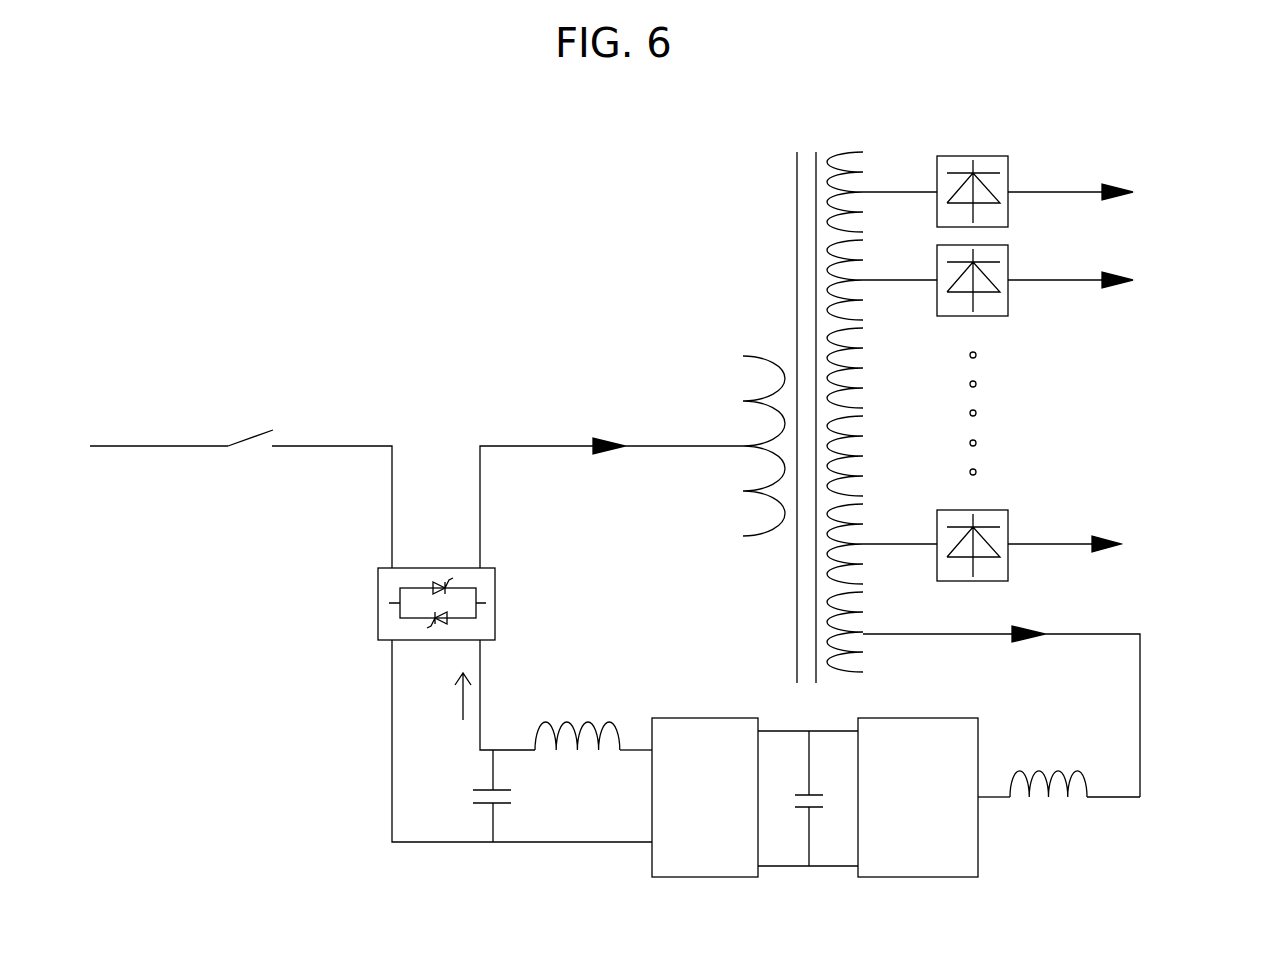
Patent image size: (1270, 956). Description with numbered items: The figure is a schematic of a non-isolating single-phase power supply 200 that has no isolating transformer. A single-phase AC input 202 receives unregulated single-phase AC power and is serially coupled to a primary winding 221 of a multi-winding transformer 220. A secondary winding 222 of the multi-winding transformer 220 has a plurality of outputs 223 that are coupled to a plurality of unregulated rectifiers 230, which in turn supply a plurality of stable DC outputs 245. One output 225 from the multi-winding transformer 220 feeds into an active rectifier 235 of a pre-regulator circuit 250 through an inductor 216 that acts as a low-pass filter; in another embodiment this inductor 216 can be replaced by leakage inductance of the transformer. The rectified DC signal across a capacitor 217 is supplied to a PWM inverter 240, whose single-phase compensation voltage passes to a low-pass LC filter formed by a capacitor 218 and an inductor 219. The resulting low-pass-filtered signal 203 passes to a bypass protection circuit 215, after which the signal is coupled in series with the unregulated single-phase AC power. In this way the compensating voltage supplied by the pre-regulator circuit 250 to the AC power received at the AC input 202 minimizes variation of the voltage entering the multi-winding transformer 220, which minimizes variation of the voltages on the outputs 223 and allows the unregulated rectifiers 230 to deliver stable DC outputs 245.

The power supply 200 is at (489, 164).
The single-phase AC input 202 is at (152, 407).
The low-pass-filtered signal 203 is at (458, 694).
The bypass protection circuit 215 is at (495, 596).
The inductor 216 is at (1020, 800).
The capacitor 217 is at (797, 814).
The capacitor 218 is at (512, 780).
The inductor 219 is at (610, 753).
The multi-winding transformer 220 is at (795, 100).
The primary winding 221 is at (759, 348).
The secondary winding 222 is at (862, 375).
The outputs 223 is at (905, 165).
The output 225 is at (1160, 645).
The unregulated rectifiers 230 is at (991, 135).
The active rectifier 235 is at (896, 854).
The PWM inverter 240 is at (683, 851).
The DC outputs 245 is at (1130, 215).
The pre-regulator circuit 250 is at (395, 895).